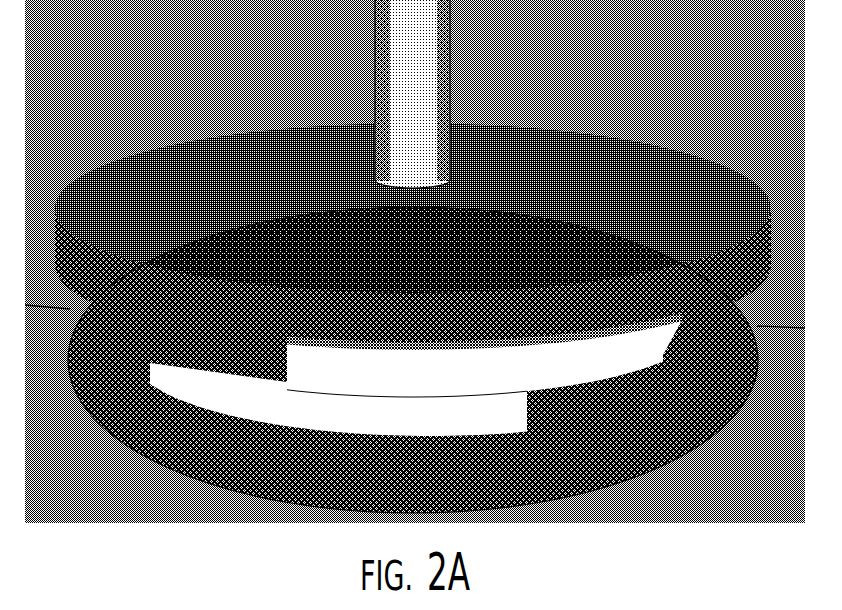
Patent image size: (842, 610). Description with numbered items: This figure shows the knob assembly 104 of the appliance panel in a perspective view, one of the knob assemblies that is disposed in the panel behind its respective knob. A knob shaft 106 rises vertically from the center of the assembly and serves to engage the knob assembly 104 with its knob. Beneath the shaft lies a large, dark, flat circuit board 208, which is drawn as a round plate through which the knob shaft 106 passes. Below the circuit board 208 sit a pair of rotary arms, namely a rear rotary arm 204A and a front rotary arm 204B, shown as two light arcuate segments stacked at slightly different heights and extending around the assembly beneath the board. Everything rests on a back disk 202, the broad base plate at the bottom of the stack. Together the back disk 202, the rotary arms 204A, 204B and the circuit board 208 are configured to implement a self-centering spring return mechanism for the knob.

The knob assembly 104 is at (113, 63).
The knob shaft 106 is at (428, 91).
The back disk 202 is at (712, 468).
The rear rotary arm 204A is at (110, 432).
The front rotary arm 204B is at (632, 358).
The circuit board 208 is at (563, 213).